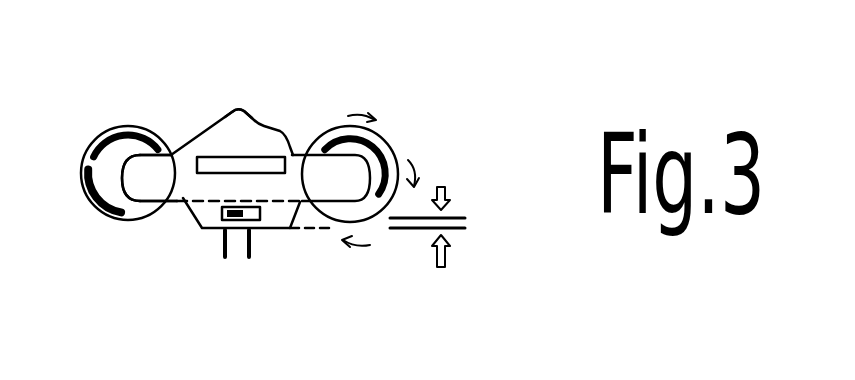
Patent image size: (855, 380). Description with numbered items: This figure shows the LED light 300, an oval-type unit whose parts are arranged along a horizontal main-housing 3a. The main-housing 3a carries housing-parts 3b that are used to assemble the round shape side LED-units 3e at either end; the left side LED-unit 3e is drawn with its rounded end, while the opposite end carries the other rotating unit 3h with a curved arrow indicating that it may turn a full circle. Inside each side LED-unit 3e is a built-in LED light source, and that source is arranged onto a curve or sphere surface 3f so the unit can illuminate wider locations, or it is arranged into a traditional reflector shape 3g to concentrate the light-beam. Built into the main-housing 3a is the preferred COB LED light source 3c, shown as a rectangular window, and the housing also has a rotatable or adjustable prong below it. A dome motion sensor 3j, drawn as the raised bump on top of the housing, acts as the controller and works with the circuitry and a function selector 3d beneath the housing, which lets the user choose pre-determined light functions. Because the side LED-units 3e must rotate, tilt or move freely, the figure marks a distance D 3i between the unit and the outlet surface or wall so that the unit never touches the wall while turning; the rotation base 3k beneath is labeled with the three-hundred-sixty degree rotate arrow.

The LED light 300 is at (586, 58).
The main-housing 3a is at (265, 138).
The housing-parts 3b is at (145, 178).
The COB LED 3c is at (217, 157).
The function selector 3d is at (253, 220).
The side LED-unit 3e is at (146, 216).
The curve or sphere surface 3f is at (133, 128).
The reflector shape 3g is at (90, 198).
The rotating right wheel 3h is at (390, 148).
The distance D 3i is at (461, 227).
The dome motion sensor 3j is at (242, 109).
The rotation base 3k is at (389, 292).